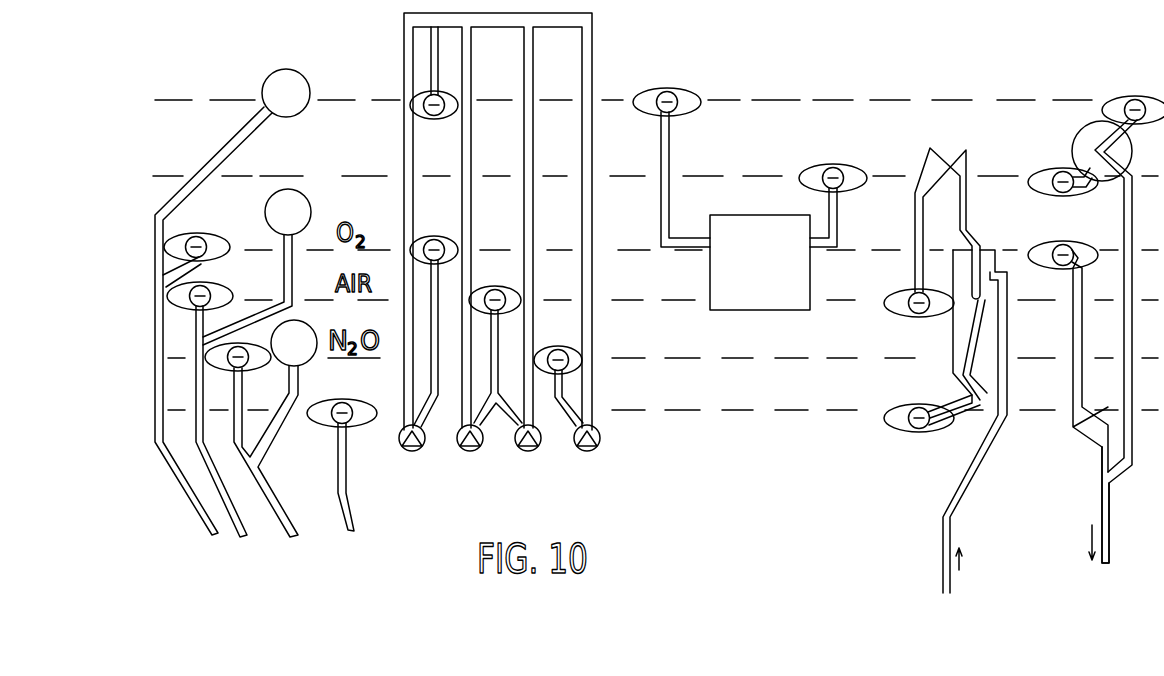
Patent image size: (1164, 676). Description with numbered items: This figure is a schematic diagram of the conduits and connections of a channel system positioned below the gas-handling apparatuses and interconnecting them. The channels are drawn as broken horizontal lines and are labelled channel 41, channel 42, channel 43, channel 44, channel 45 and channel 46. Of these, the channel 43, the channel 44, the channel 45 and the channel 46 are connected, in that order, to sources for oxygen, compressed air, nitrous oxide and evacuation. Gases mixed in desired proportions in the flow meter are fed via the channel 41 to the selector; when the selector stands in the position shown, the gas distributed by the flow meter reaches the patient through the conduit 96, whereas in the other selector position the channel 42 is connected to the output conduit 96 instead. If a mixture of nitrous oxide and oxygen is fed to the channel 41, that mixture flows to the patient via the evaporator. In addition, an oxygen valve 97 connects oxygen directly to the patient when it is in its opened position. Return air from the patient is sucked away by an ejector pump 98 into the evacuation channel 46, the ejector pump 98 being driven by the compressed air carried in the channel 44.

The channel 41 is at (888, 100).
The channel 42 is at (888, 176).
The channel 43 is at (888, 250).
The channel 44 is at (843, 300).
The channel 45 is at (841, 358).
The evacuation channel 46 is at (843, 410).
The conduit 96 is at (1102, 502).
The oxygen valve 97 is at (1083, 428).
The ejector pump 98 is at (953, 348).